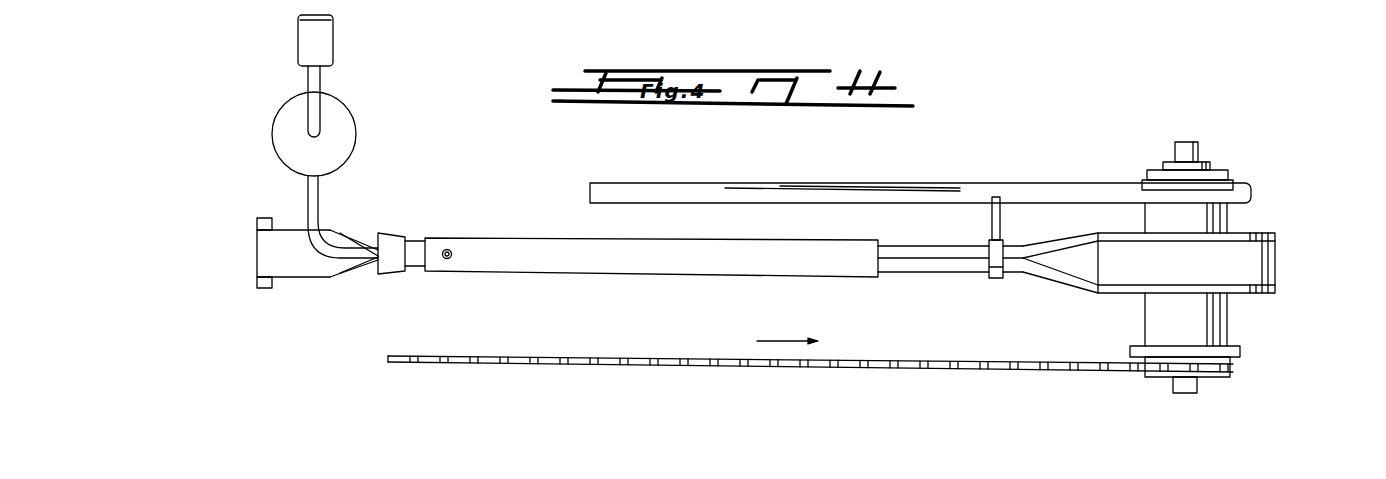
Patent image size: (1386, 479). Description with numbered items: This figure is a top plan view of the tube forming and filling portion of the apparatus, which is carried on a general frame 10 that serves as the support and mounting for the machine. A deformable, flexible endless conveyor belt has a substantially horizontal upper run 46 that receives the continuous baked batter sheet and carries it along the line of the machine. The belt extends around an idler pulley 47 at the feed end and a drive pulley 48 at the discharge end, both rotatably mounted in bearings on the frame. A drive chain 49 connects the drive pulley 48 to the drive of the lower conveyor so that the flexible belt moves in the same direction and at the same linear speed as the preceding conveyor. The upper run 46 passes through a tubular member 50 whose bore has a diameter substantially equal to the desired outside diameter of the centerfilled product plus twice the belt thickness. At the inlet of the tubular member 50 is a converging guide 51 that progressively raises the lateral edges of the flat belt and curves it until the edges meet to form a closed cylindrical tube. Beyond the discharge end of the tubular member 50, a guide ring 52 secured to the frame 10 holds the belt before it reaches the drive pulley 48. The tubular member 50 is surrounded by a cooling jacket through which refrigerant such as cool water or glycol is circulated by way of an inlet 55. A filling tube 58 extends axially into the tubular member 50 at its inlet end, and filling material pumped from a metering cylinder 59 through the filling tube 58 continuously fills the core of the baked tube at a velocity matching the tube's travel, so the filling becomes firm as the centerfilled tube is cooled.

The frame 10 is at (936, 184).
The upper run 46 is at (277, 253).
The idler pulley 47 is at (257, 222).
The drive pulley 48 is at (1270, 234).
The drive chain 49 is at (675, 357).
The tubular member 50 is at (550, 258).
The converging guide 51 is at (405, 265).
The guide ring 52 is at (996, 280).
The inlet 55 is at (447, 259).
The filling tube 58 is at (318, 188).
The metering cylinder 59 is at (272, 136).